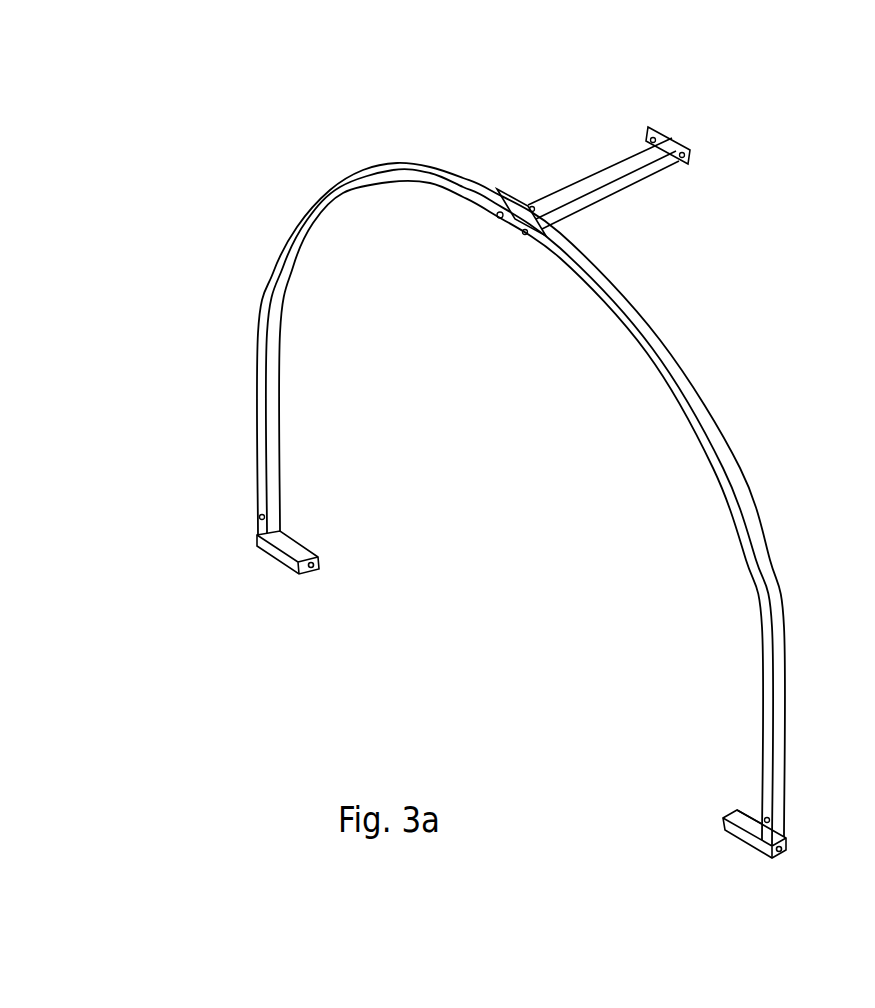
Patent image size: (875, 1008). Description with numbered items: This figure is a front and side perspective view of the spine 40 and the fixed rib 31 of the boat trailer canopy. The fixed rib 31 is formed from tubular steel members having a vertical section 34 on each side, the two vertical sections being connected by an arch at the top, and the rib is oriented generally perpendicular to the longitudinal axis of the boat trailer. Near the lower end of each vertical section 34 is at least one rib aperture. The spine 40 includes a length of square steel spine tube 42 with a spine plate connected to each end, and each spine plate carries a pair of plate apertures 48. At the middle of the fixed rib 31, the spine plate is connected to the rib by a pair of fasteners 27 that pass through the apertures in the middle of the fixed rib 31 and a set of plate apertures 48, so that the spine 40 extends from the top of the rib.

The fastener 27 is at (493, 218).
The fixed rib 31 is at (770, 700).
The vertical section 34 is at (260, 407).
The spine 40 is at (578, 154).
The spine tube 42 is at (640, 150).
The plate aperture 48 is at (690, 168).